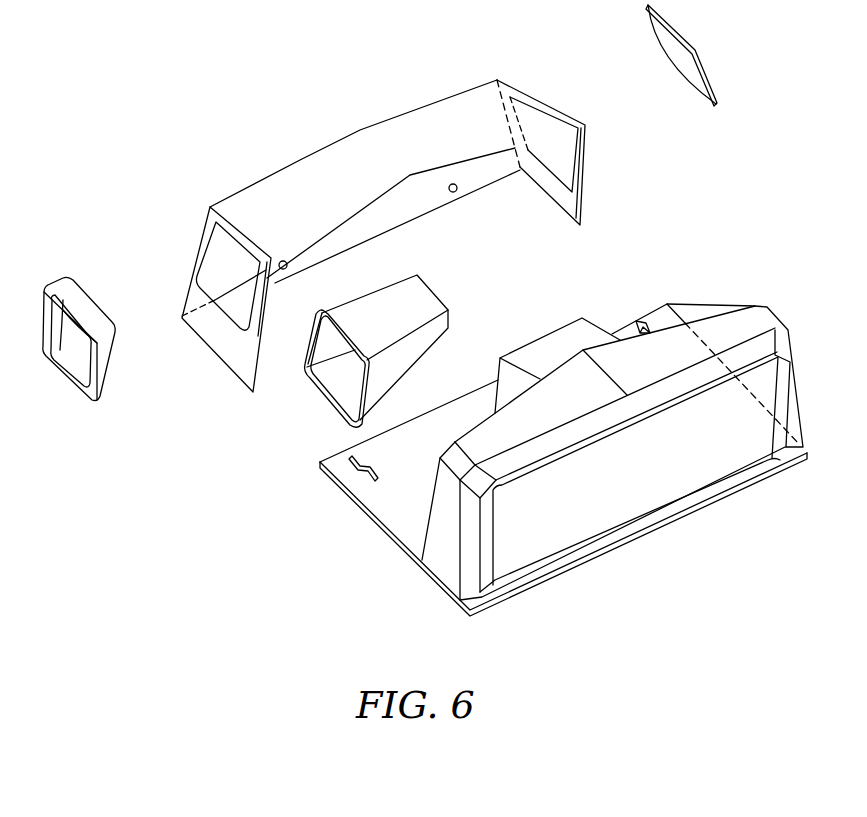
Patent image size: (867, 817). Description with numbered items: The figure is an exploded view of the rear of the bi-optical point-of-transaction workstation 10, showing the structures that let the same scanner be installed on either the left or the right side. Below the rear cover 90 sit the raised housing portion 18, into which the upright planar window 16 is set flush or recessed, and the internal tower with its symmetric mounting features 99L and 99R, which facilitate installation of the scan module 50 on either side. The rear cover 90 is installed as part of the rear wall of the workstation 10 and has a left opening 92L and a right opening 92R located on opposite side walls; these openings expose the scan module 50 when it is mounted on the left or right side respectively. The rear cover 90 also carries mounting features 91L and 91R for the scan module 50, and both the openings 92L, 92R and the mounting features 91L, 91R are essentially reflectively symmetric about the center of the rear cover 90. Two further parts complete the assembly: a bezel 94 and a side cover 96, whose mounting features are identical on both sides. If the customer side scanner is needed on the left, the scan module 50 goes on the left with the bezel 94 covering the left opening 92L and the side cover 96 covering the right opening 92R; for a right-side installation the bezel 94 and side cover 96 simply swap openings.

The workstation 10 is at (376, 588).
The upright planar window 16 is at (768, 407).
The raised housing portion 18 is at (775, 318).
The scan module 50 is at (438, 298).
The rear cover 90 is at (432, 113).
The mounting feature 91L is at (290, 268).
The mounting feature 91R is at (458, 191).
The left opening 92L is at (215, 259).
The right opening 92R is at (568, 158).
The bezel 94 is at (73, 282).
The side cover 96 is at (662, 38).
The mounting feature 99L is at (350, 450).
The mounting feature 99R is at (643, 321).